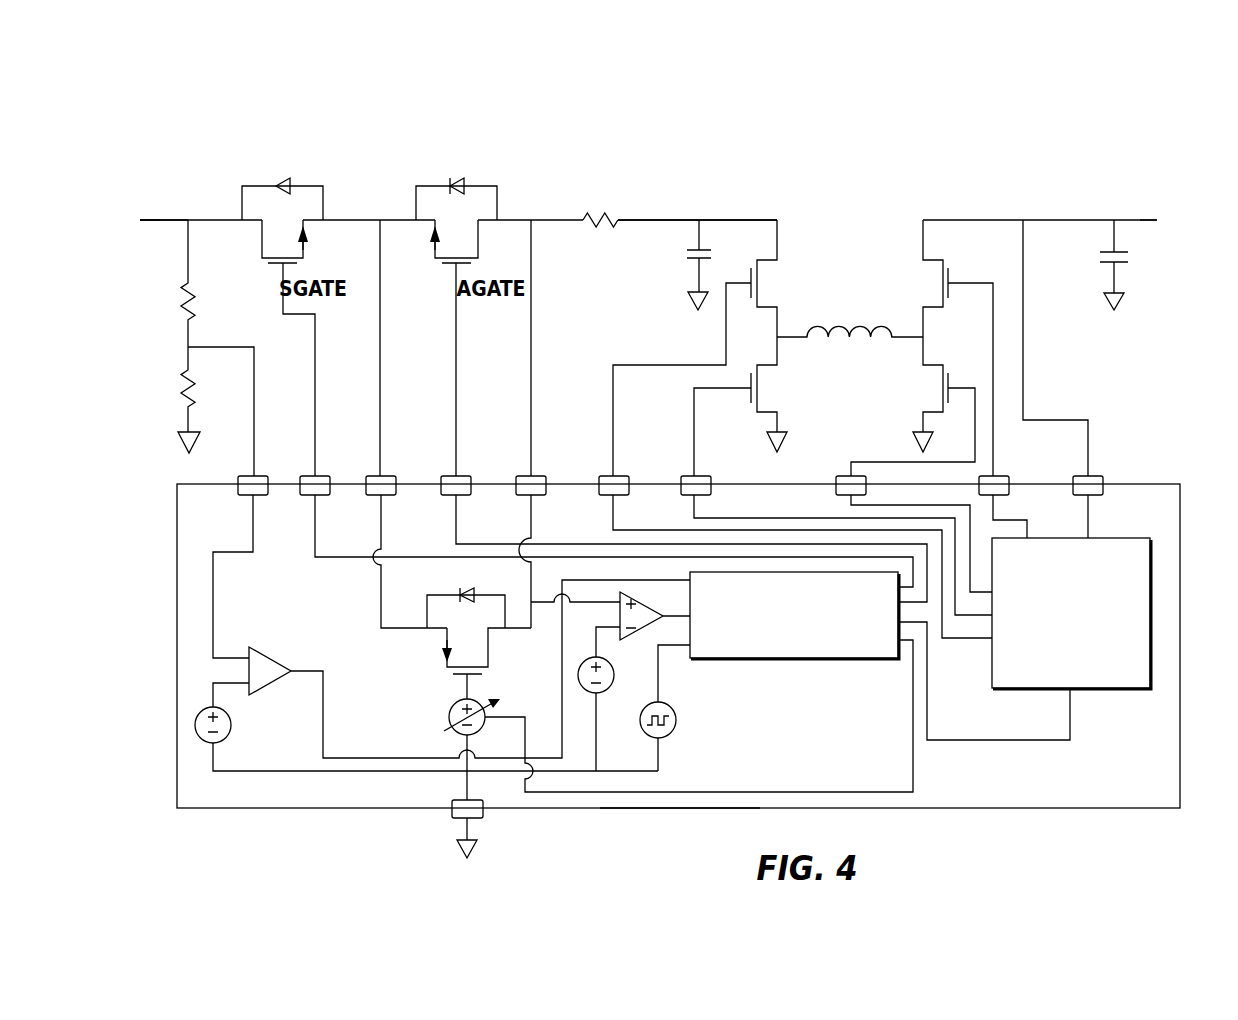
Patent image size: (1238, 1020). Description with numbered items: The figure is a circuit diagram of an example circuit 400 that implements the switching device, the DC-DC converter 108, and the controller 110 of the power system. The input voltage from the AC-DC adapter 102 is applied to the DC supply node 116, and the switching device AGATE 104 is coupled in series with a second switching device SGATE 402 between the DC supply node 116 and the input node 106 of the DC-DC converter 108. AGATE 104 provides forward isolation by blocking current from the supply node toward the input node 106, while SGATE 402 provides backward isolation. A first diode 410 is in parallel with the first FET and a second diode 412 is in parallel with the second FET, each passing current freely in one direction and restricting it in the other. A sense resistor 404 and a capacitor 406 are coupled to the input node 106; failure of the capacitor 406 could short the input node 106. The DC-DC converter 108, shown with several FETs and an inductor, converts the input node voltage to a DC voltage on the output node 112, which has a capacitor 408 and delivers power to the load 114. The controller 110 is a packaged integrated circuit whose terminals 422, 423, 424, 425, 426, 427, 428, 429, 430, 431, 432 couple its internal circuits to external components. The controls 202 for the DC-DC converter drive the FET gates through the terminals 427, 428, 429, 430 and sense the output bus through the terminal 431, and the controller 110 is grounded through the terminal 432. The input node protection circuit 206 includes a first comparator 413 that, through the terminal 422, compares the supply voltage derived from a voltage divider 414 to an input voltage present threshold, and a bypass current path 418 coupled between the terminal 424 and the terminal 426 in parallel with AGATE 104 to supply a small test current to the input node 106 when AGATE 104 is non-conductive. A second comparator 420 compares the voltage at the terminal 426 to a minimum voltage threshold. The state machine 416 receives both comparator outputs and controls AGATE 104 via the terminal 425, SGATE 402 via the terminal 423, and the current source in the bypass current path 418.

The circuit 400 is at (410, 105).
The DC supply node 116 is at (184, 158).
The AC-DC adapter 102 is at (102, 237).
The first diode 410 is at (305, 186).
The SGATE 402 is at (307, 246).
The second diode 412 is at (472, 186).
The AGATE 104 is at (433, 250).
The sense resistor 404 is at (590, 262).
The capacitor 406 is at (690, 262).
The input node 106 is at (655, 177).
The DC-DC converter 108 is at (862, 207).
The output node 112 is at (1024, 193).
The load 114 is at (1189, 235).
The capacitor 408 is at (1120, 268).
The voltage divider 414 is at (150, 364).
The controller 110 is at (1002, 812).
The terminal 422 is at (260, 476).
The terminal 423 is at (322, 476).
The terminal 424 is at (388, 476).
The terminal 425 is at (463, 476).
The terminal 426 is at (538, 476).
The terminal 427 is at (620, 476).
The terminal 428 is at (702, 476).
The terminal 429 is at (851, 476).
The terminal 430 is at (1000, 476).
The terminal 431 is at (1094, 476).
The terminal 432 is at (453, 815).
The first comparator 413 is at (277, 657).
The bypass current path 418 is at (396, 640).
The second comparator 420 is at (640, 645).
The state machine 416 is at (830, 660).
The controls for the DC-DC converter 202 is at (1098, 690).
The input node protection circuit 206 is at (677, 832).